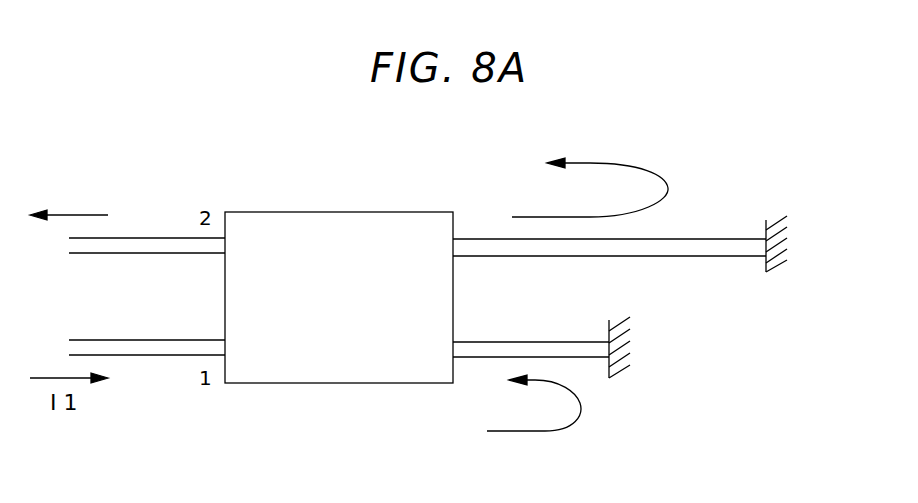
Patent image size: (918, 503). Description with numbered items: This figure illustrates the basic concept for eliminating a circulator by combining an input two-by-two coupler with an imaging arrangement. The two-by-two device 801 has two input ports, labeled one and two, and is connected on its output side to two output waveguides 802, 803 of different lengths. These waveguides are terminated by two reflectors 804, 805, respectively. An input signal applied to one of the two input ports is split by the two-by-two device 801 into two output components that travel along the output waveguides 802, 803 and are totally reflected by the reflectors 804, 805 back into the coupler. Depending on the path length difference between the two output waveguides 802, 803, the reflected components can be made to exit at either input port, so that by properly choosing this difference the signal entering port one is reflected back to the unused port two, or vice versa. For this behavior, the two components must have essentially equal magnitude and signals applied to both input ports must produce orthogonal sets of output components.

The 2×2 device 801 is at (337, 383).
The output waveguide 802 is at (565, 342).
The output waveguide 803 is at (722, 239).
The reflector 804 is at (635, 343).
The reflector 805 is at (793, 241).